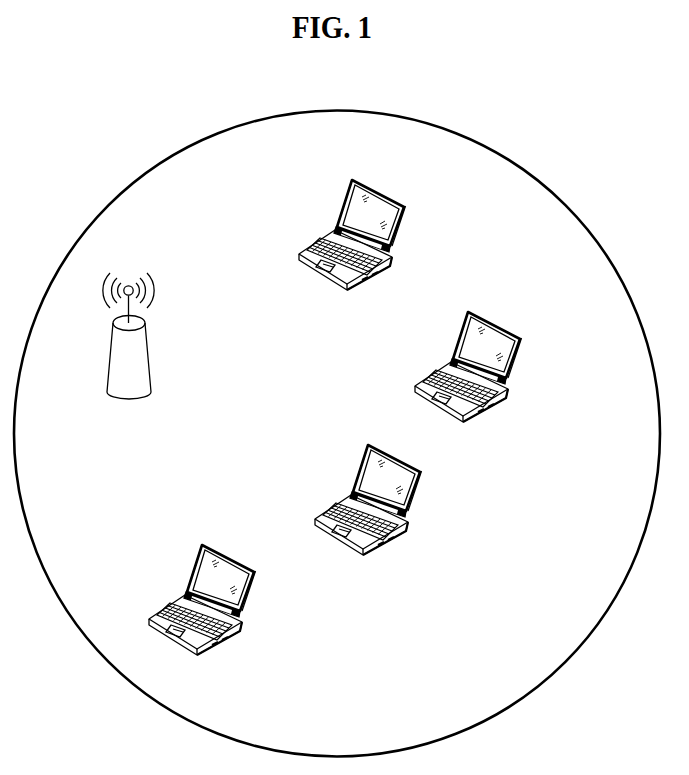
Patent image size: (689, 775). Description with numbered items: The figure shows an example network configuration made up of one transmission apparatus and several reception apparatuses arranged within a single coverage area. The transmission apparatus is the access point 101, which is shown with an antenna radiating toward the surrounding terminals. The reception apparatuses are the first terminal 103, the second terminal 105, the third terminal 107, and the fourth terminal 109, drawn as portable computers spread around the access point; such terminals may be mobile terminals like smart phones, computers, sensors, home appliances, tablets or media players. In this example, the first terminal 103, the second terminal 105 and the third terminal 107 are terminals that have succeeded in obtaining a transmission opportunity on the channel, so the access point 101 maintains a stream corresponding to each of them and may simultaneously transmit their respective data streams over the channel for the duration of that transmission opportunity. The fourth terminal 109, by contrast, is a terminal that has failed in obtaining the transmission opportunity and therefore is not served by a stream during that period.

The AP1 101 is at (148, 346).
The STA1 103 is at (392, 253).
The STA2 105 is at (508, 385).
The STA3 107 is at (408, 518).
The STA4 109 is at (242, 618).